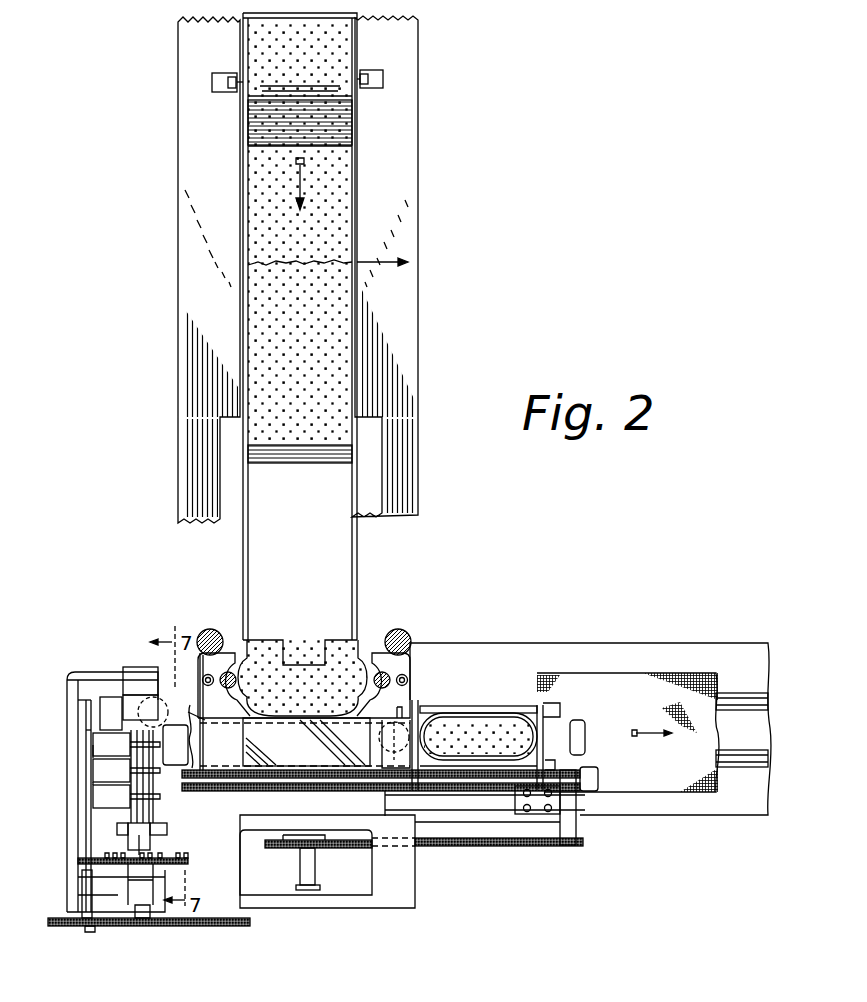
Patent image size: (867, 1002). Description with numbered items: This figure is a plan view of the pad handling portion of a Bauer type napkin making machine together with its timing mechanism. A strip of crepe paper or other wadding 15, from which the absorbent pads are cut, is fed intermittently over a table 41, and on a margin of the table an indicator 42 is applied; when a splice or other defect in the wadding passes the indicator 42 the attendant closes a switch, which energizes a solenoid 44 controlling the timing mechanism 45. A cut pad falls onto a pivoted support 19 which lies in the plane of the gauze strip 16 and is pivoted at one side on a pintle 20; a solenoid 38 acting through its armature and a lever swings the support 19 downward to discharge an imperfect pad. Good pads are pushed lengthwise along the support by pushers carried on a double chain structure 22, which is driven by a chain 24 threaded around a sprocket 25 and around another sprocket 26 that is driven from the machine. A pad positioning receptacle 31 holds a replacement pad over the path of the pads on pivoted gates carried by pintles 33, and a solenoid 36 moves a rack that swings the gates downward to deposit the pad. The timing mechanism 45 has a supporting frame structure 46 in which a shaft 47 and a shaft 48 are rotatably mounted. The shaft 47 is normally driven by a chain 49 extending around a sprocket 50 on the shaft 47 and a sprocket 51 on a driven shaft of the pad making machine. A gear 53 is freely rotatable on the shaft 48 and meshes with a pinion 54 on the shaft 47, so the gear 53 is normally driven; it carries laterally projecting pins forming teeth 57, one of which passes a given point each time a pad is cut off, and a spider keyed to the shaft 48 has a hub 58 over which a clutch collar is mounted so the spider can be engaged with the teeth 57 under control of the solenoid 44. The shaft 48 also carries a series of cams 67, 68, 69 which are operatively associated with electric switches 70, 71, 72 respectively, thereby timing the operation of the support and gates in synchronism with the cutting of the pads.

The wadding strip 15 is at (345, 355).
The gauze strip 16 is at (668, 795).
The pivoted support 19 is at (353, 753).
The pivot pintle 20 is at (404, 716).
The double chain structure 22 is at (300, 776).
The drive chain 24 is at (488, 846).
The sprocket 25 is at (578, 845).
The driven sprocket 26 is at (277, 848).
The pad positioning receptacle 31 is at (483, 712).
The pintles 33 is at (535, 708).
The solenoid 36 is at (412, 710).
The solenoid 38 is at (190, 712).
The table 41 is at (388, 224).
The indicator 42 is at (382, 262).
The solenoid 44 is at (150, 698).
The timing mechanism 45 is at (53, 750).
The supporting frame structure 46 is at (67, 800).
The shaft 47 is at (80, 830).
The shaft 48 is at (138, 910).
The chain 49 is at (183, 918).
The sprocket 50 is at (77, 925).
The sprocket 51 is at (240, 926).
The gear 53 is at (190, 861).
The pinion 54 is at (78, 860).
The teeth 57 is at (175, 855).
The hub 58 is at (128, 840).
The cam 67 is at (130, 744).
The cam 68 is at (130, 770).
The cam 69 is at (130, 796).
The electric switch 70 is at (93, 745).
The electric switch 71 is at (93, 770).
The electric switch 72 is at (93, 793).